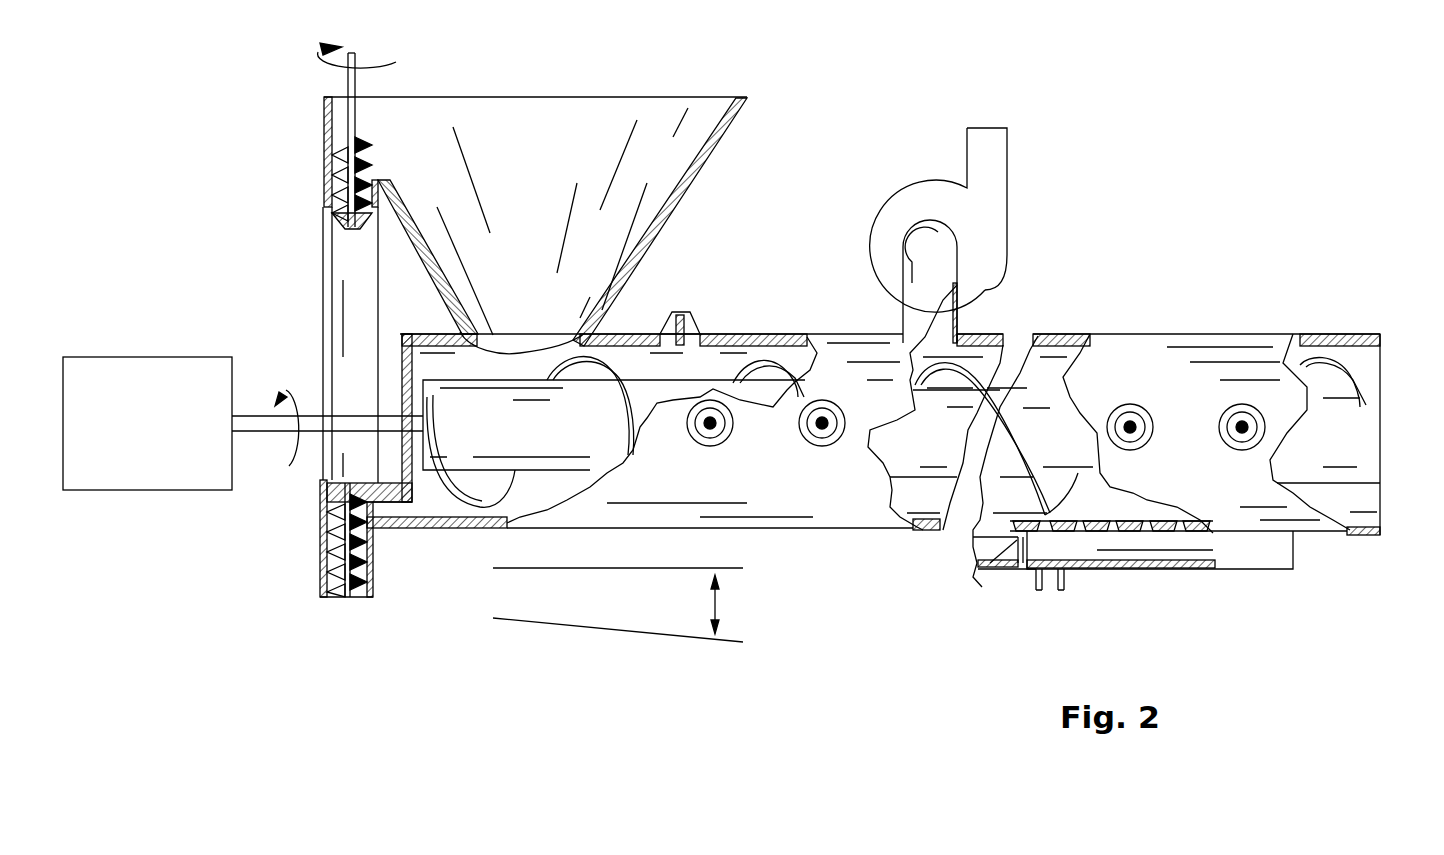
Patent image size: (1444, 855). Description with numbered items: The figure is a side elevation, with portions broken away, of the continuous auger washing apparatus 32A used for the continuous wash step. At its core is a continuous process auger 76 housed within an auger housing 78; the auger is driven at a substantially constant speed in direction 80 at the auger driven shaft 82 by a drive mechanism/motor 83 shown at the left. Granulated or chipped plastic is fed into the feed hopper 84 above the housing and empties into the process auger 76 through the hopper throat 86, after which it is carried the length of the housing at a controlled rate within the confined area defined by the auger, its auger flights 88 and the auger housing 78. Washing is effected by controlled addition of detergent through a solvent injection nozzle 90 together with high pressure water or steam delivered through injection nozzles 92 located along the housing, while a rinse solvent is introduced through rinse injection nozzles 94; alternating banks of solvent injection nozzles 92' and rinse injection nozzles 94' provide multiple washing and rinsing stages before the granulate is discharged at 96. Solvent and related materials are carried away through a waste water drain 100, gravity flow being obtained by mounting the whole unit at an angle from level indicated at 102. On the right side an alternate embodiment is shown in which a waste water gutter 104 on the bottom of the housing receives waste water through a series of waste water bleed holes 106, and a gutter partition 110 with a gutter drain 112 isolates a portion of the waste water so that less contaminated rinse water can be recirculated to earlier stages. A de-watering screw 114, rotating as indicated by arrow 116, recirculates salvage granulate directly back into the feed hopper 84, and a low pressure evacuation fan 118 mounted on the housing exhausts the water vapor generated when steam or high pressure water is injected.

The apparatus 32A is at (1172, 301).
The continuous process auger 76 is at (502, 431).
The auger housing 78 is at (775, 337).
The direction 80 is at (284, 392).
The auger driven shaft 82 is at (250, 433).
The drive mechanism/motor 83 is at (154, 491).
The feed hopper 84 is at (710, 147).
The hopper throat 86 is at (543, 341).
The auger flights 88 is at (614, 418).
The solvent injection nozzle 90 is at (690, 317).
The injection nozzles 92 is at (708, 444).
The rinse injection nozzles 94 is at (822, 444).
The injection nozzles 92' is at (1142, 442).
The rinse injection nozzles 94' is at (1222, 418).
The discharge 96 is at (1381, 508).
The waste water drain 100 is at (417, 508).
The angle from level 102 is at (718, 620).
The waste water gutter 104 is at (1147, 570).
The waste water bleed holes 106 is at (1145, 520).
The gutter partition 110 is at (1012, 547).
The gutter drain 112 is at (1065, 587).
The de-watering screw 114 is at (358, 128).
The arrow 116 is at (397, 63).
The low pressure evacuation fan 118 is at (1008, 203).